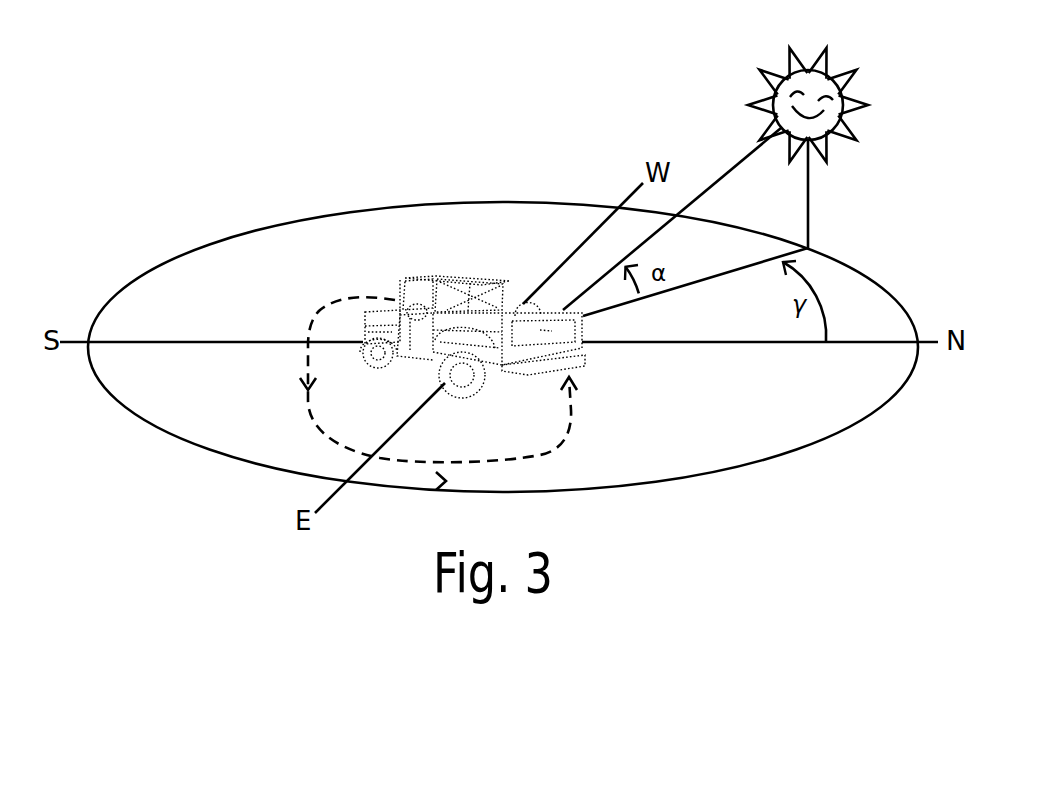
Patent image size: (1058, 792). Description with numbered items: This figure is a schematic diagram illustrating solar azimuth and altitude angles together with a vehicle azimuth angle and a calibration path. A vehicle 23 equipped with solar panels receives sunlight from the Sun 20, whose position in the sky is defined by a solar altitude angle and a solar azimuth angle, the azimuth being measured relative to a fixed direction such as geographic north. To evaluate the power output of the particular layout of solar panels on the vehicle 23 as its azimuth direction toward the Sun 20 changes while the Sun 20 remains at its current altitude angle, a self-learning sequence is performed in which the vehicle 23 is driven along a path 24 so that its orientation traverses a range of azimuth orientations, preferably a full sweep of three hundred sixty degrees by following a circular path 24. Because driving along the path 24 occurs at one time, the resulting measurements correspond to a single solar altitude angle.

The Sun 20 is at (823, 83).
The vehicle 23 is at (485, 278).
The path 24 is at (318, 316).